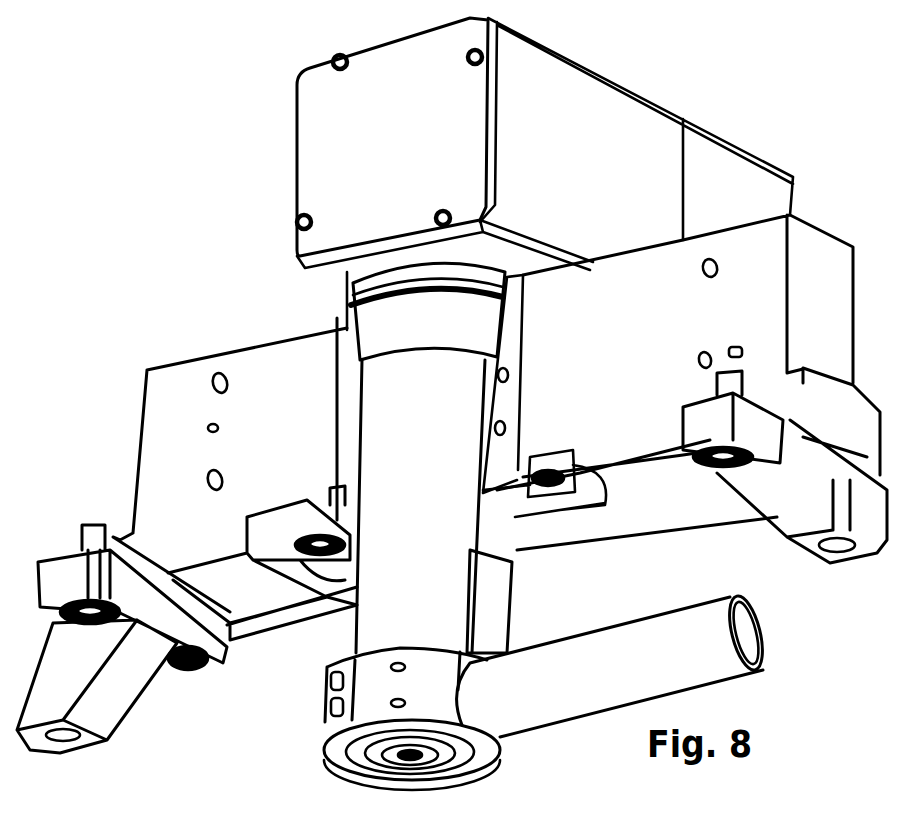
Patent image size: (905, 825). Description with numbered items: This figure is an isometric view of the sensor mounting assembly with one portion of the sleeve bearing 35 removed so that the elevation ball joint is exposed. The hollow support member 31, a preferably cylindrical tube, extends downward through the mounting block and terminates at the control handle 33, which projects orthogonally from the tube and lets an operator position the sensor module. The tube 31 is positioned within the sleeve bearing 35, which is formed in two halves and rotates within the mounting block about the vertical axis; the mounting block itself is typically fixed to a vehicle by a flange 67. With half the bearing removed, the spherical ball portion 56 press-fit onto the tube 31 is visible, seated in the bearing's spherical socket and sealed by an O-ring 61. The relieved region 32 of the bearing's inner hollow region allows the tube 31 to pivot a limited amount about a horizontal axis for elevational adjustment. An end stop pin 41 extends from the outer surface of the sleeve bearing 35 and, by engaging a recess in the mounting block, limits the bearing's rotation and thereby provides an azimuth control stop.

The support member 31 is at (382, 604).
The relieved region 32 is at (512, 528).
The control handle 33 is at (700, 665).
The sleeve bearing 35 is at (355, 432).
The end stop pin 41 is at (583, 513).
The spherical ball portion 56 is at (387, 327).
The O-ring 61 is at (347, 308).
The flange 67 is at (873, 510).